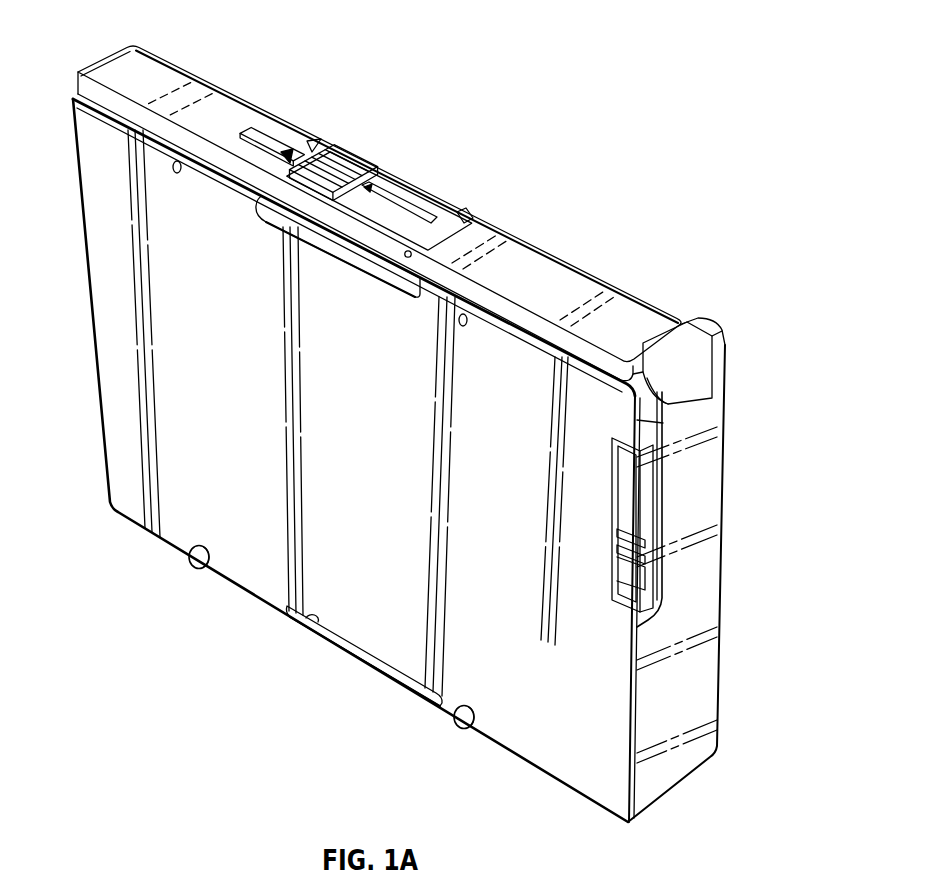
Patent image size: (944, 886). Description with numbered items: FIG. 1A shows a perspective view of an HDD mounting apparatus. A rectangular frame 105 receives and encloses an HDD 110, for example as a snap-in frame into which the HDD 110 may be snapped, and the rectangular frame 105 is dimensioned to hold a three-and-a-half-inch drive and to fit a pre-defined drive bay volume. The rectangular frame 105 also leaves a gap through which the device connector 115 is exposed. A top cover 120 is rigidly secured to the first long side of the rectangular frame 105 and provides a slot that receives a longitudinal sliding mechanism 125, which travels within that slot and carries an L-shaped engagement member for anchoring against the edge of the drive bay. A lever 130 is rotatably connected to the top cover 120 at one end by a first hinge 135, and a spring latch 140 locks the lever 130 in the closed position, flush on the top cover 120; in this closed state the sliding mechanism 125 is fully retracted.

The rectangular frame 105 is at (680, 760).
The HDD 110 is at (522, 742).
The device connector 115 is at (632, 485).
The top cover 120 is at (142, 67).
The sliding mechanism 125 is at (688, 350).
The lever 130 is at (378, 182).
The first hinge 135 is at (404, 256).
The spring latch 140 is at (324, 148).